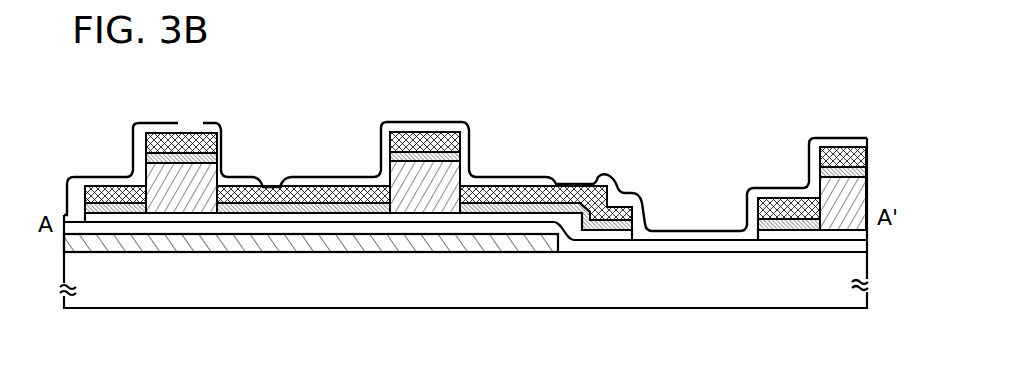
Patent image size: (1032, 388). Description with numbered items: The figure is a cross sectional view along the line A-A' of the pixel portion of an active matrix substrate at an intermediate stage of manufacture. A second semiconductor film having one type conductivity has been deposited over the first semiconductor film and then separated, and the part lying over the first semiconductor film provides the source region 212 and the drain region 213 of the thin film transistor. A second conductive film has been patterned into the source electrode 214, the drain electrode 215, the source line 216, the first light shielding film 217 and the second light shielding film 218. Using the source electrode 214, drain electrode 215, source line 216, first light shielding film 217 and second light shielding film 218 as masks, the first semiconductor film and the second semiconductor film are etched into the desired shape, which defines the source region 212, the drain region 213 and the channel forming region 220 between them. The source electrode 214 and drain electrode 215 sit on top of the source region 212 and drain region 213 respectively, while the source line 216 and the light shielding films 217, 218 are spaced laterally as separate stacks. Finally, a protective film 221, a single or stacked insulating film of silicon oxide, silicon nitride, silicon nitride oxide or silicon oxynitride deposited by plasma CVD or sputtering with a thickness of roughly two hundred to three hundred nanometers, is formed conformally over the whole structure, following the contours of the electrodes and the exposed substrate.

The source region 212 is at (302, 192).
The drain region 213 is at (532, 197).
The source electrode 214 is at (353, 192).
The drain electrode 215 is at (487, 193).
The source line 216 is at (163, 137).
The first light shielding film 217 is at (428, 142).
The second light shielding film 218 is at (108, 193).
The channel forming region 220 is at (440, 220).
The protective film 221 is at (680, 235).